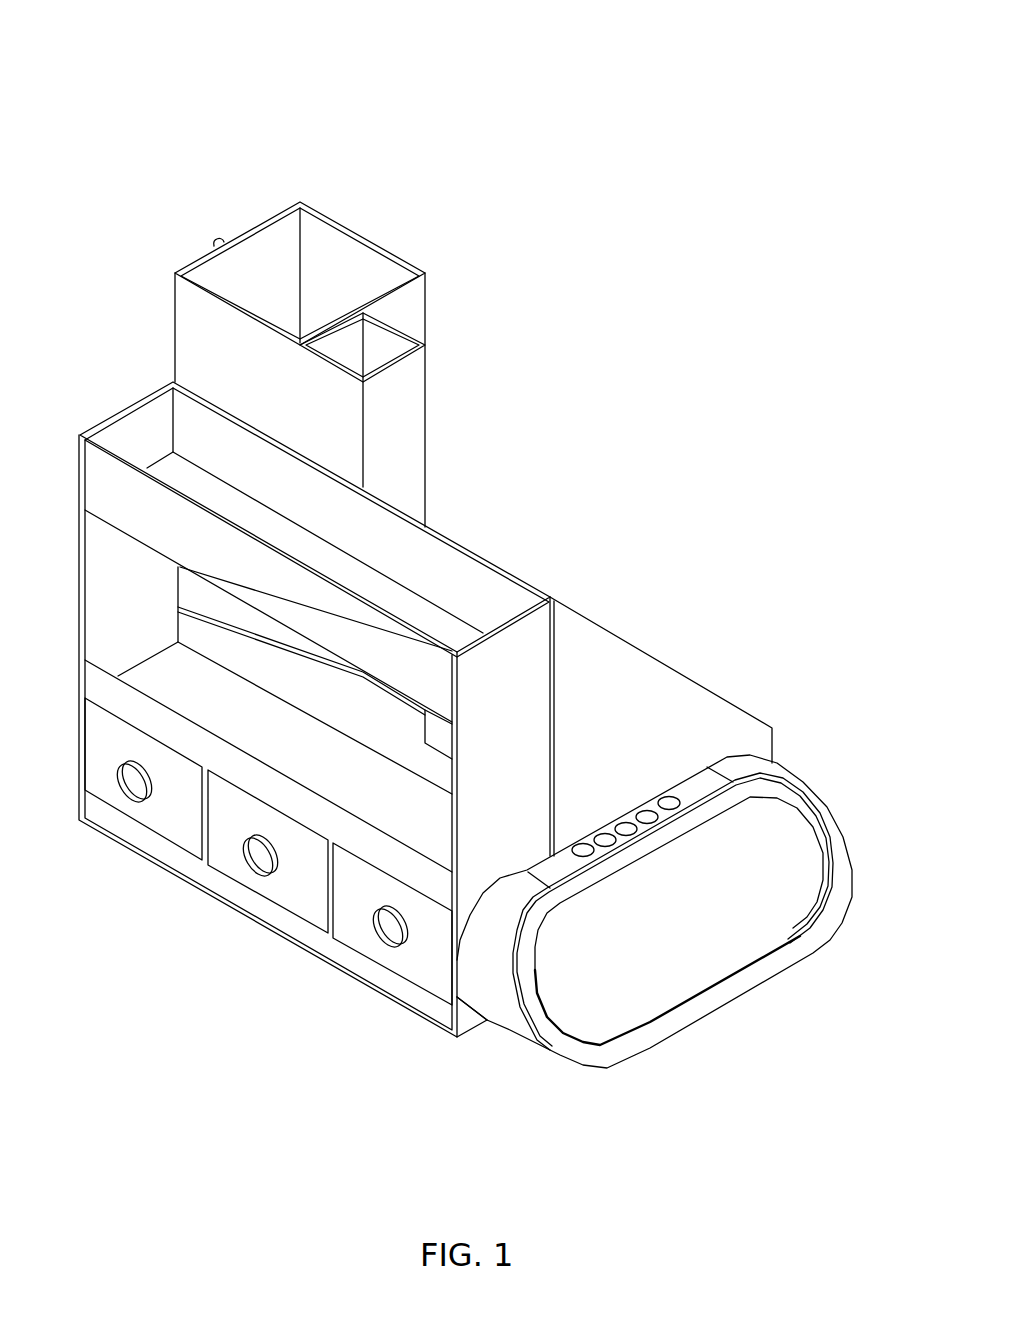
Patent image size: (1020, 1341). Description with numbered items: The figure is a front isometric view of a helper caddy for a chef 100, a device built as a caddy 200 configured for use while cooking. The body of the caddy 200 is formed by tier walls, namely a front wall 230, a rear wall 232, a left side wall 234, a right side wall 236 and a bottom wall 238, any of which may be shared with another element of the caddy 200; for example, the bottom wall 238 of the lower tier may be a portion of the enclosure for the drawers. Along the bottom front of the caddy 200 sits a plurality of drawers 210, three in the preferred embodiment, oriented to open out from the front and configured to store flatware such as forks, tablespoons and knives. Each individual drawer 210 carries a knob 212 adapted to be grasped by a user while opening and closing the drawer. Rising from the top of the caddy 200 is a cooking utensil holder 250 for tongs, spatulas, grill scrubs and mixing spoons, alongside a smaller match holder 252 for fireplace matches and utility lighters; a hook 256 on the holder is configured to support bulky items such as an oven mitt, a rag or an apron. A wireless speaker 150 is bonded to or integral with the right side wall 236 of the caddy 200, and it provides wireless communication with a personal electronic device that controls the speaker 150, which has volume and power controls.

The helper caddy for a chef 100 is at (118, 174).
The wireless speaker 150 is at (648, 957).
The caddy 200 is at (833, 1037).
The plurality of drawers 210 is at (380, 967).
The knob 212 is at (128, 788).
The front wall 230 is at (128, 488).
The rear wall 232 is at (463, 570).
The left side wall 234 is at (138, 432).
The right side wall 236 is at (513, 660).
The bottom wall 238 is at (375, 583).
The cooking utensil holder 250 is at (275, 233).
The match holder 252 is at (390, 350).
The hook 256 is at (216, 242).